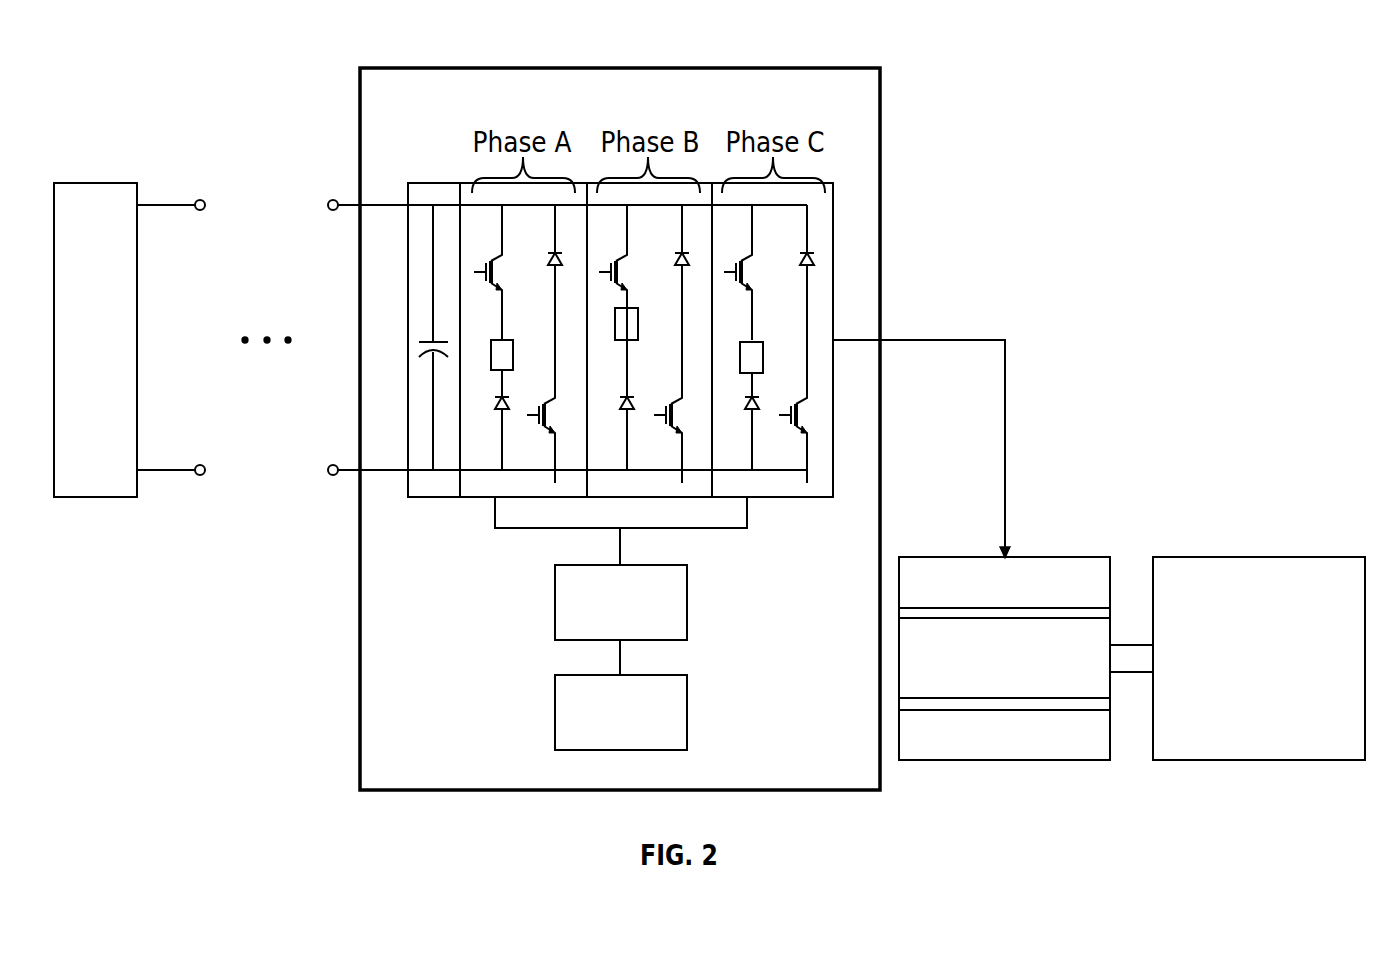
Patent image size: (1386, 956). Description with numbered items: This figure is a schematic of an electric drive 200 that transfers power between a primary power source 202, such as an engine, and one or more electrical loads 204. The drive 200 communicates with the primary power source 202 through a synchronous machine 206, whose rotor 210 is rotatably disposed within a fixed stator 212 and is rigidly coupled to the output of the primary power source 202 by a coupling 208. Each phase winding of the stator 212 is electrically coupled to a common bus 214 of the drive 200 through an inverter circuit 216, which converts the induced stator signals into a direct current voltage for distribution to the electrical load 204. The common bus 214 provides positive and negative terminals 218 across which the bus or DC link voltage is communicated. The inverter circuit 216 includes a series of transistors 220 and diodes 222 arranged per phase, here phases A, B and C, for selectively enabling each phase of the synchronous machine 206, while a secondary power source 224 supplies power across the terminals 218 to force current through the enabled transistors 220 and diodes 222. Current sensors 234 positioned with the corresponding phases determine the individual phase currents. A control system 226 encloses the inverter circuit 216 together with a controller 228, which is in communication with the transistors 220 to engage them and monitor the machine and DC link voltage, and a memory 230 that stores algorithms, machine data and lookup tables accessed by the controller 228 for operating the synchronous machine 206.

The electric drive 200 is at (1044, 62).
The primary power source 202 is at (1300, 557).
The electrical load 204 is at (100, 183).
The synchronous machine 206 is at (1027, 556).
The coupling 208 is at (1130, 645).
The rotor 210 is at (1090, 578).
The stator 212 is at (947, 572).
The common bus 214 is at (165, 470).
The inverter circuit 216 is at (430, 183).
The terminals 218 is at (332, 200).
The transistor 220 is at (474, 272).
The diode 222 is at (493, 400).
The secondary power source 224 is at (428, 340).
The control system 226 is at (820, 68).
The controller 228 is at (555, 600).
The memory 230 is at (555, 710).
The current sensor 234 is at (513, 352).